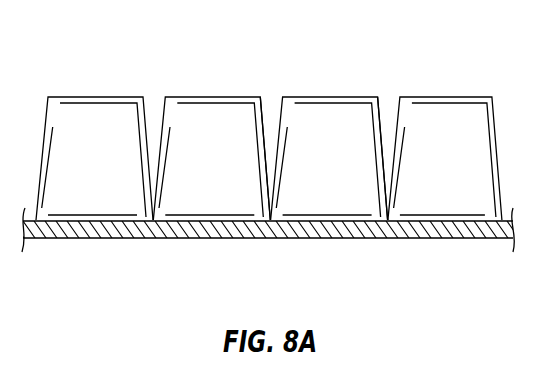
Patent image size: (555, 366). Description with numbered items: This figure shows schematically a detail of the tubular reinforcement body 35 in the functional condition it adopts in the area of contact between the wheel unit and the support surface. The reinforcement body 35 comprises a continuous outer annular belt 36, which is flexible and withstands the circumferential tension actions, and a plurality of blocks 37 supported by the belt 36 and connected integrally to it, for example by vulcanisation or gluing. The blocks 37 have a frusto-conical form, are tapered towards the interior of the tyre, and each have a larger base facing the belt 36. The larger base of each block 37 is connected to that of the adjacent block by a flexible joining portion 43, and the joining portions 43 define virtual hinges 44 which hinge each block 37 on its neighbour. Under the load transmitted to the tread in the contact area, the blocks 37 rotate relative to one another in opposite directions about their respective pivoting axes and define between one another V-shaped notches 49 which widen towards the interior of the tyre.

The tubular reinforcement body 35 is at (447, 91).
The continuous outer annular belt 36 is at (303, 232).
The blocks 37 is at (195, 117).
The flexible joining portion 43 is at (153, 221).
The virtual hinge 44 is at (152, 247).
The V-shaped notch 49 is at (264, 118).